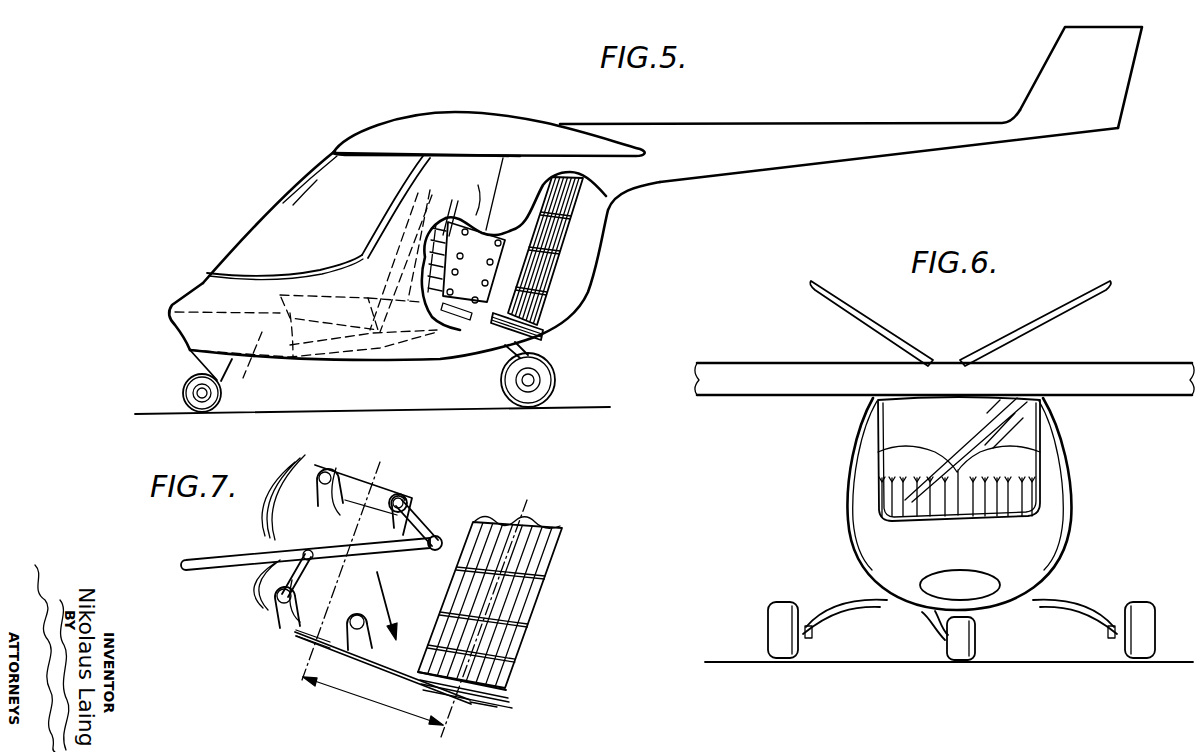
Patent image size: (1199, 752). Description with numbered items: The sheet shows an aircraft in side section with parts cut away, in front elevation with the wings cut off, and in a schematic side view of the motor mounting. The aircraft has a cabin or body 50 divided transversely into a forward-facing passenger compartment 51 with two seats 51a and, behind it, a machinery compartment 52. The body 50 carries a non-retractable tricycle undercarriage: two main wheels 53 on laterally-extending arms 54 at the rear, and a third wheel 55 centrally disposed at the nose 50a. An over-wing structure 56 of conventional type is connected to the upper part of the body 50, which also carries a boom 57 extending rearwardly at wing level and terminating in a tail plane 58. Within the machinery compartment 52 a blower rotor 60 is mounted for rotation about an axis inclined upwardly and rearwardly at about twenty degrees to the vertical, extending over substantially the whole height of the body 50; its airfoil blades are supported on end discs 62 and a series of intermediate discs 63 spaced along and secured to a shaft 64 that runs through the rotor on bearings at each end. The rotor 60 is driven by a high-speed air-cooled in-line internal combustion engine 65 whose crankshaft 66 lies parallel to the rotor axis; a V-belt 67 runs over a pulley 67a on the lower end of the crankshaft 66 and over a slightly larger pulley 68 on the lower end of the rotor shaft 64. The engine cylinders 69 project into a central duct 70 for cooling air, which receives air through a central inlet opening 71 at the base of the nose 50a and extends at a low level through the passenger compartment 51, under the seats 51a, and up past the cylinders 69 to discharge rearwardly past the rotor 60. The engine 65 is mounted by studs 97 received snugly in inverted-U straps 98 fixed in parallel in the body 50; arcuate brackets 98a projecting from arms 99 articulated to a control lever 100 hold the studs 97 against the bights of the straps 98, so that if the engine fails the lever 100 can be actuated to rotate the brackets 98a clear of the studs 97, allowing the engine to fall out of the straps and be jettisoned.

In FIG. 5, the body 50 is at (384, 371).
In FIG. 6, the body 50 is at (856, 566).
In FIG. 5, the nose 50a is at (183, 302).
In FIG. 5, the passenger compartment 51 is at (290, 217).
In FIG. 5, the seats 51a is at (322, 292).
In FIG. 5, the machinery compartment 52 is at (478, 320).
In FIG. 5, the main wheels 53 is at (556, 378).
In FIG. 6, the main wheels 53 is at (790, 650).
In FIG. 5, the laterally-extending arms 54 is at (530, 350).
In FIG. 6, the laterally-extending arms 54 is at (850, 607).
In FIG. 5, the third wheel 55 is at (190, 393).
In FIG. 5, the over-wing structure 56 is at (470, 118).
In FIG. 6, the over-wing structure 56 is at (818, 376).
In FIG. 5, the boom 57 is at (833, 133).
In FIG. 5, the tail plane 58 is at (1057, 75).
In FIG. 6, the tail plane 58 is at (1013, 336).
In FIG. 5, the blower rotor 60 is at (560, 233).
In FIG. 7, the blower rotor 60 is at (545, 557).
In FIG. 5, the end discs 62 is at (557, 321).
In FIG. 7, the end discs 62 is at (500, 694).
In FIG. 5, the intermediate discs 63 is at (550, 293).
In FIG. 7, the intermediate discs 63 is at (527, 642).
In FIG. 7, the rotor shaft 64 is at (470, 708).
In FIG. 5, the internal combustion engine 65 is at (482, 192).
In FIG. 7, the internal combustion engine 65 is at (396, 490).
In FIG. 5, the crankshaft 66 is at (437, 305).
In FIG. 7, the V-belt 67 is at (372, 663).
In FIG. 7, the pulley 67a is at (295, 640).
In FIG. 7, the pulley 68 is at (497, 705).
In FIG. 5, the cylinders 69 is at (444, 236).
In FIG. 5, the central duct 70 is at (259, 366).
In FIG. 5, the central inlet opening 71 is at (186, 342).
In FIG. 7, the studs 97 is at (322, 478).
In FIG. 7, the straps 98 is at (390, 516).
In FIG. 7, the arcuate brackets 98a is at (395, 492).
In FIG. 7, the arms 99 is at (425, 530).
In FIG. 7, the control lever 100 is at (250, 557).